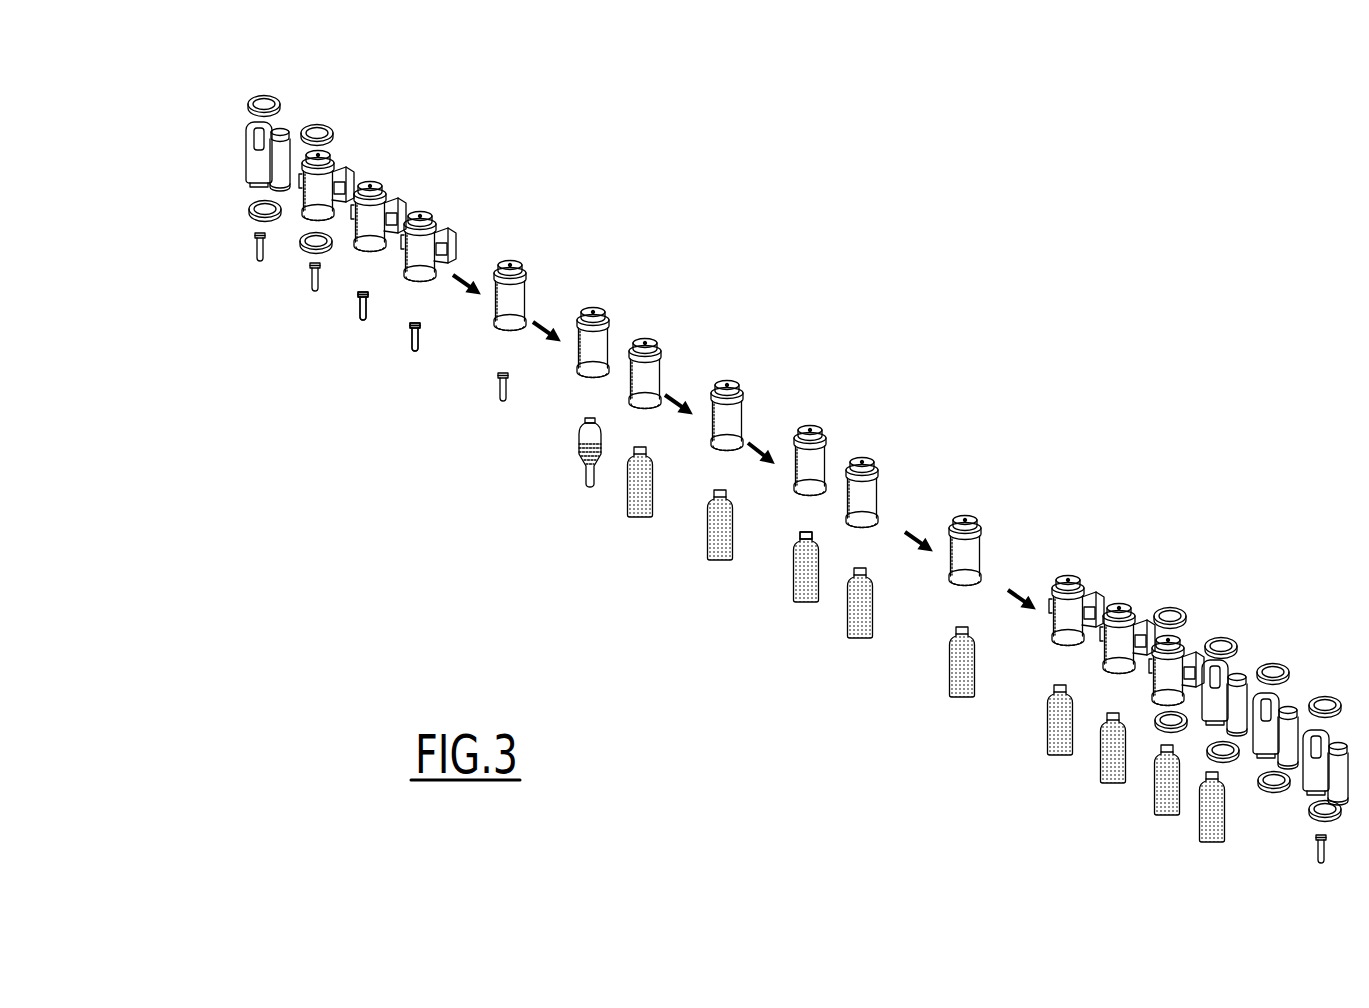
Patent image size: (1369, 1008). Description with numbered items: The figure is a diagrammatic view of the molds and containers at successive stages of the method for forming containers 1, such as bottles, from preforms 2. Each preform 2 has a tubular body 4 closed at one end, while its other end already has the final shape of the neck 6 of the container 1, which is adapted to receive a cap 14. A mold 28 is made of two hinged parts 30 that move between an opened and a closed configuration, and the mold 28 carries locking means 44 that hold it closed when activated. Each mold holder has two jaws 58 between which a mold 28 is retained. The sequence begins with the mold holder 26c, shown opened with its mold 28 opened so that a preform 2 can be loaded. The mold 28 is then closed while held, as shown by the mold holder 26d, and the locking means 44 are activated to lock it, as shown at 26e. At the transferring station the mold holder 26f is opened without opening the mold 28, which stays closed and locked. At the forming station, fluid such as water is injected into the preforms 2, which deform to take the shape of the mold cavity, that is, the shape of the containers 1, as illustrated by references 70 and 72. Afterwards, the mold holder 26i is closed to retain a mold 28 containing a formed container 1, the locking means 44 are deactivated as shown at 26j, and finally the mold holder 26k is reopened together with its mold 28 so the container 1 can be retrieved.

The container 1 is at (787, 619).
The preform 2 is at (352, 337).
The body 4 is at (415, 342).
The neck 6 is at (416, 326).
The cap 14 is at (803, 526).
The mold holder 26c is at (284, 128).
The mold holder 26d is at (335, 168).
The mold holder 26e is at (400, 207).
The mold holder 26f is at (448, 228).
The mold holder 26i is at (1138, 617).
The mold holder 26j is at (1193, 653).
The mold holder 26k is at (1096, 592).
The mold 28 is at (583, 306).
The part 30 is at (248, 164).
The locking means 44 is at (878, 473).
The jaws 58 is at (328, 128).
The preform being formed 70 is at (578, 455).
The formed container 72 is at (628, 500).